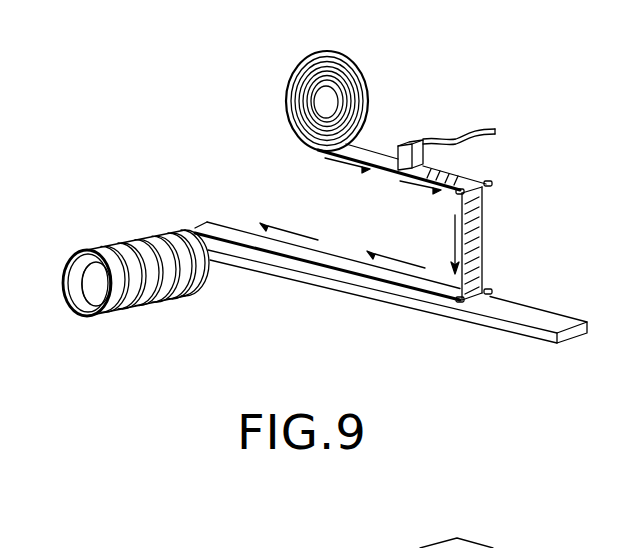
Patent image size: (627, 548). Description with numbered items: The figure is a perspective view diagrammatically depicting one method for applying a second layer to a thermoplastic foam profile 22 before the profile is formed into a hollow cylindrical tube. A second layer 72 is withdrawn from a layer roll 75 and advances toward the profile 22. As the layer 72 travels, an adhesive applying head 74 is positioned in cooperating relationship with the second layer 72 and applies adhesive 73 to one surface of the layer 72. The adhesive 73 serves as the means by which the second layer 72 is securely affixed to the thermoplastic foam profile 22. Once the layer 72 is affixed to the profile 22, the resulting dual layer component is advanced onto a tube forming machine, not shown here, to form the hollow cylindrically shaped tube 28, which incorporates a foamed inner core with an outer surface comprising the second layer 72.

The thermoplastic foam profile 22 is at (538, 335).
The hollow cylindrically shaped tube 28 is at (159, 313).
The second layer 72 is at (372, 148).
The adhesive 73 is at (477, 268).
The adhesive applying head 74 is at (418, 140).
The layer roll 75 is at (326, 102).